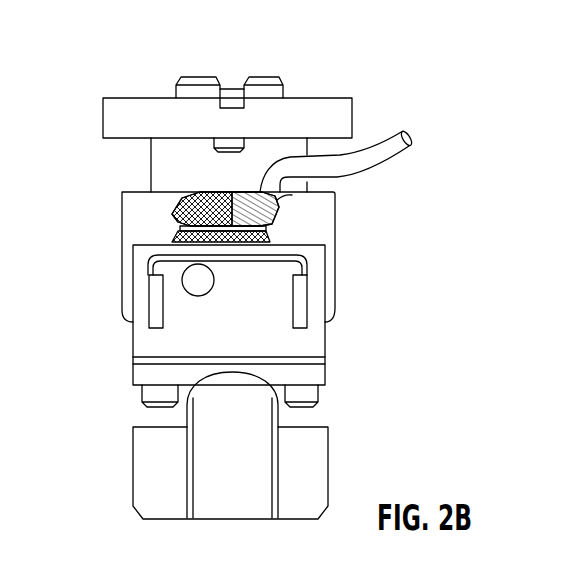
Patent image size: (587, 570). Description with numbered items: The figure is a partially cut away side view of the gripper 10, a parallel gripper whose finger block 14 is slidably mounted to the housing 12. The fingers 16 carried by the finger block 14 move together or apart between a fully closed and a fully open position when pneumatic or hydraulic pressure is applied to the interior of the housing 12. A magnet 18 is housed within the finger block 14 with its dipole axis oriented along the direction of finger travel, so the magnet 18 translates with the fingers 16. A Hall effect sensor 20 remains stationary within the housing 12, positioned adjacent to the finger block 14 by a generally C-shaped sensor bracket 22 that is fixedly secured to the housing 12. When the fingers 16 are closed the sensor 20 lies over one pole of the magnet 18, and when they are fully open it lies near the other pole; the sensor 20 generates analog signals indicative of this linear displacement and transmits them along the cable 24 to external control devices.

The gripper 10 is at (240, 48).
The housing 12 is at (150, 159).
The finger block 14 is at (328, 345).
The fingers 16 is at (328, 467).
The magnet 18 is at (208, 294).
The Hall effect sensor 20 is at (170, 223).
The sensor bracket 22 is at (337, 262).
The cable 24 is at (362, 177).